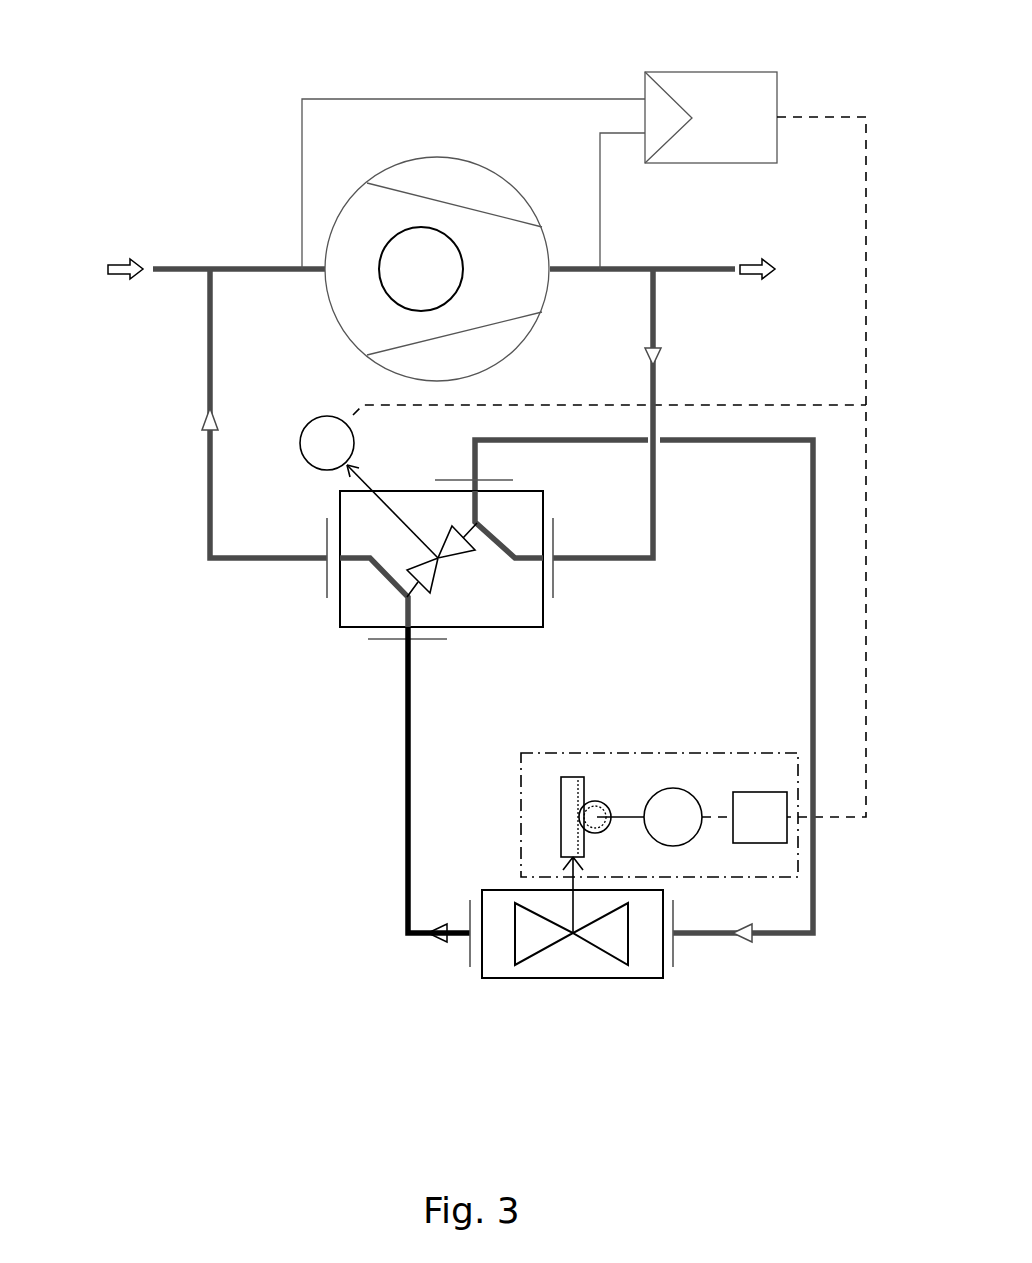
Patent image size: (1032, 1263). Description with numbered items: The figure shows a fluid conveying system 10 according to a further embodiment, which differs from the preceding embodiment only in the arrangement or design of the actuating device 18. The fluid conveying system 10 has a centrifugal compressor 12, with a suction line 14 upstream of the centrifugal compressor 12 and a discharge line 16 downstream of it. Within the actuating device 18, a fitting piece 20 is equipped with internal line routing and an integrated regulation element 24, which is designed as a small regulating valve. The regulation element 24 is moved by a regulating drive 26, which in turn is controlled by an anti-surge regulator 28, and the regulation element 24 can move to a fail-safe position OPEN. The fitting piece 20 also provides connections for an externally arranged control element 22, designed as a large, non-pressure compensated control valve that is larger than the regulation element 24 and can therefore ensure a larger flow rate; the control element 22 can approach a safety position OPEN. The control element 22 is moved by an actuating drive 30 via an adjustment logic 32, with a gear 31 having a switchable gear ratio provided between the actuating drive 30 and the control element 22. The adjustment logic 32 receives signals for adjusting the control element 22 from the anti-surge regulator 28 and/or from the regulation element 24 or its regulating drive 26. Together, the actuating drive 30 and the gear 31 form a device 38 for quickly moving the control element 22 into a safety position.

The fluid conveying system 10 is at (158, 125).
The centrifugal compressor 12 is at (350, 293).
The suction line 14 is at (245, 262).
The discharge line 16 is at (687, 266).
The actuating device 18 is at (342, 910).
The fitting piece 20 is at (318, 623).
The control element 22 is at (588, 965).
The regulation element 24 is at (468, 587).
The regulating drive 26 is at (317, 442).
The anti-surge regulator 28 is at (703, 102).
The actuating drive 30 is at (667, 803).
The gear with switchable gear ratio 31 is at (605, 787).
The adjustment logic 32 is at (776, 836).
The device for quickly moving the control element into a safety position 38 is at (563, 752).